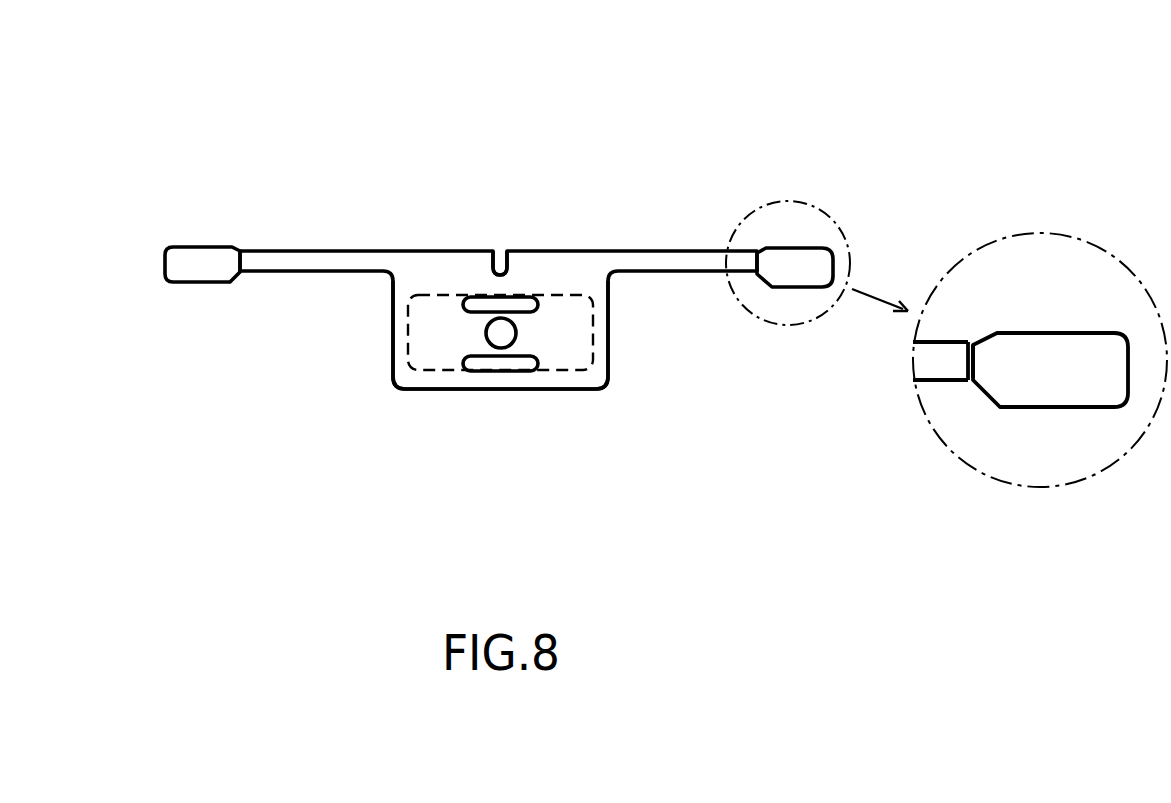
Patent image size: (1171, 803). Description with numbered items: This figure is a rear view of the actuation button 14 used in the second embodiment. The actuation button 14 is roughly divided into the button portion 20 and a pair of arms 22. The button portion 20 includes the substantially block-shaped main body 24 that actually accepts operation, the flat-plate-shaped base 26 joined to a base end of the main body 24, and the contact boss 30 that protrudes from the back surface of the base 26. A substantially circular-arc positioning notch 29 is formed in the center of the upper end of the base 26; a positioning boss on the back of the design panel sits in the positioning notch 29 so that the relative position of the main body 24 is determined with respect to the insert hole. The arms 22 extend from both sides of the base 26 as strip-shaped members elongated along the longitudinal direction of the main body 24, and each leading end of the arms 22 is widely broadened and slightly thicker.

The actuation button 14 is at (498, 147).
The button portion 20 is at (447, 400).
The arms 22 is at (283, 249).
The main body 24 is at (563, 374).
The base 26 is at (602, 348).
The positioning notch 29 is at (499, 252).
The contact boss 30 is at (500, 340).